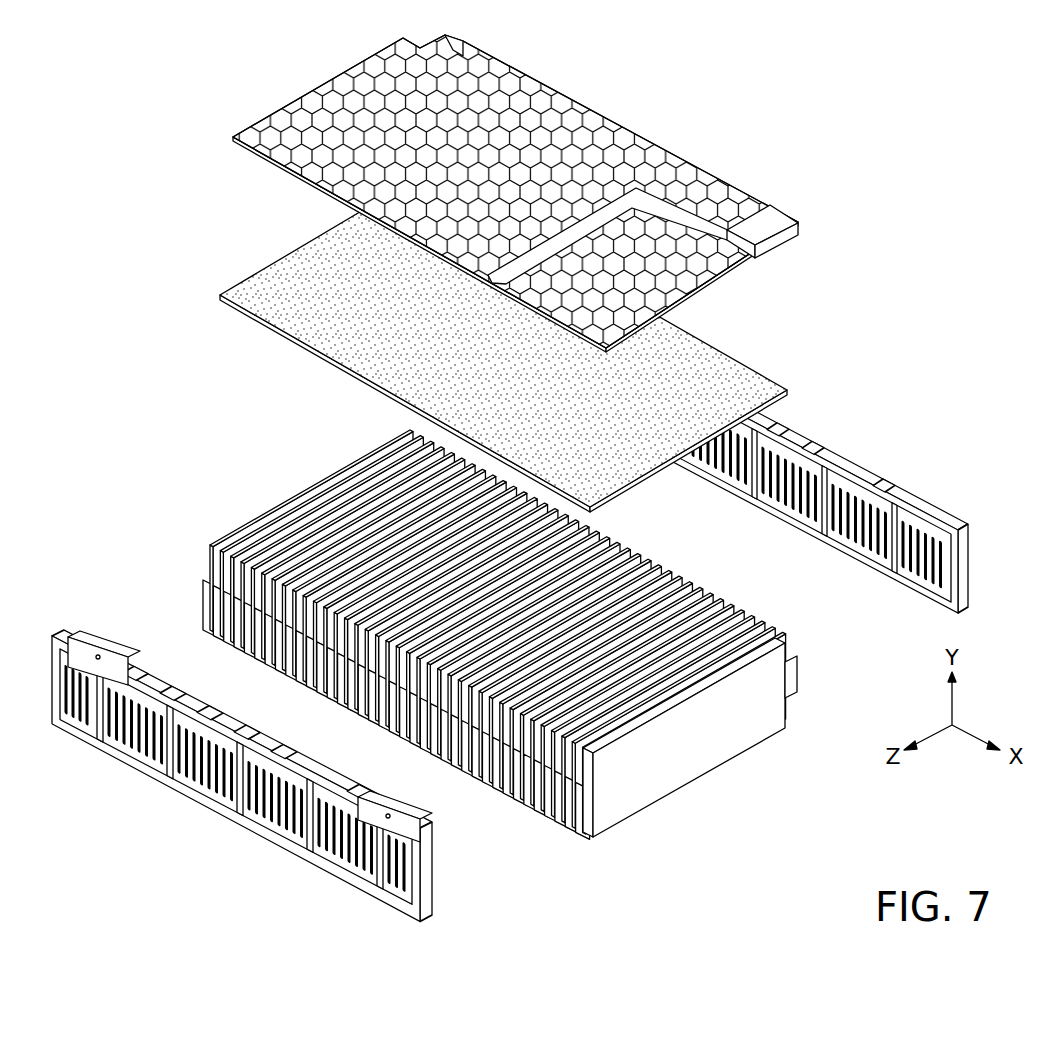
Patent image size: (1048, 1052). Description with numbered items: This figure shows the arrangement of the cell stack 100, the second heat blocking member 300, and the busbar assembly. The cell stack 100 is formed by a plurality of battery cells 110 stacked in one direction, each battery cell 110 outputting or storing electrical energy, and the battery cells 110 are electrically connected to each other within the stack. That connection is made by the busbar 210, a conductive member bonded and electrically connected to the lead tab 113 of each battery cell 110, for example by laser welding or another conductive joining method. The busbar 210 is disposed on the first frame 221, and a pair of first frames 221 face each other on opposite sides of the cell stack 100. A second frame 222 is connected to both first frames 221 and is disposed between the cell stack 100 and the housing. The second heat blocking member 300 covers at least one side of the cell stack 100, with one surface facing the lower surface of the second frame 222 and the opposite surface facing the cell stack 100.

The cell stack 100 is at (500, 661).
The battery cell 110 is at (635, 797).
The lead tab 113 is at (580, 810).
The busbar 210 is at (130, 748).
The first frame 221 is at (953, 527).
The second frame 222 is at (320, 117).
The second heat blocking member 300 is at (292, 325).